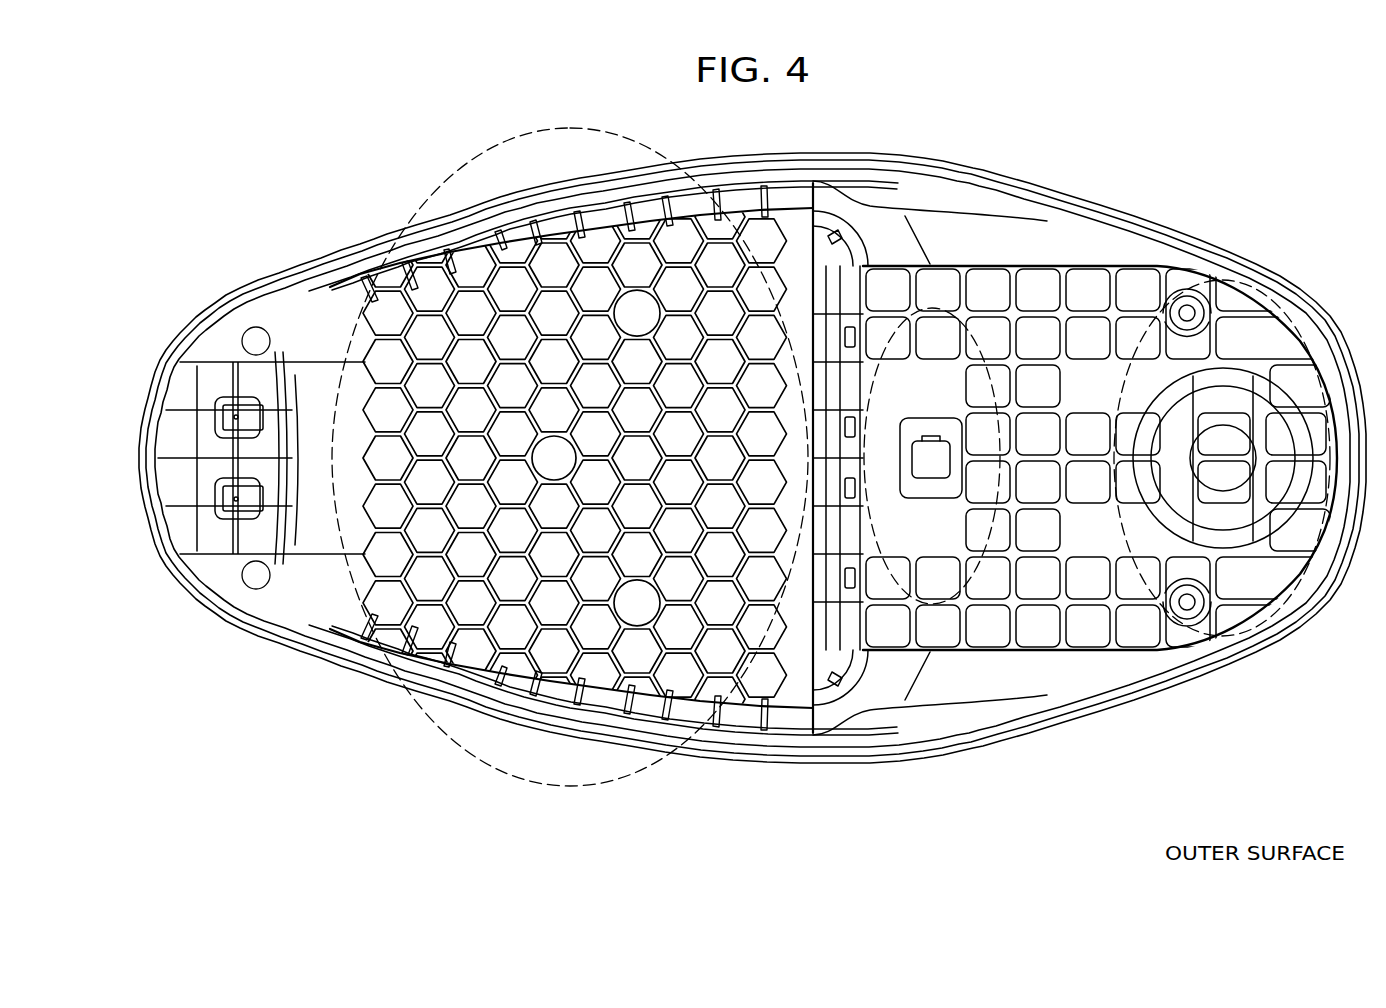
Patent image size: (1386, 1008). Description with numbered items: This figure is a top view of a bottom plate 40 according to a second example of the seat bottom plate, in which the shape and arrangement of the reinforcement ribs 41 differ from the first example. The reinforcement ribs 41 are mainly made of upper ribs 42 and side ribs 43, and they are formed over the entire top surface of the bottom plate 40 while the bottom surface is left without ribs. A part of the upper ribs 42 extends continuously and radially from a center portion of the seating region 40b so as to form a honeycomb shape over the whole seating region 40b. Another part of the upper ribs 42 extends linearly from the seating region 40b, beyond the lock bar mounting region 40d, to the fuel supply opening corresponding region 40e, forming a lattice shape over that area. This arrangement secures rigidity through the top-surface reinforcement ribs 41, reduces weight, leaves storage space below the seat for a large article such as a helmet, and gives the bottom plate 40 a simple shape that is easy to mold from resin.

The bottom plate 40 is at (233, 117).
The reinforcement ribs 41 is at (580, 841).
The upper ribs 42 is at (493, 393).
The side ribs 43 is at (580, 247).
The seating region 40b is at (507, 141).
The lock bar mounting region 40d is at (933, 315).
The fuel supply opening corresponding region 40e is at (1240, 288).